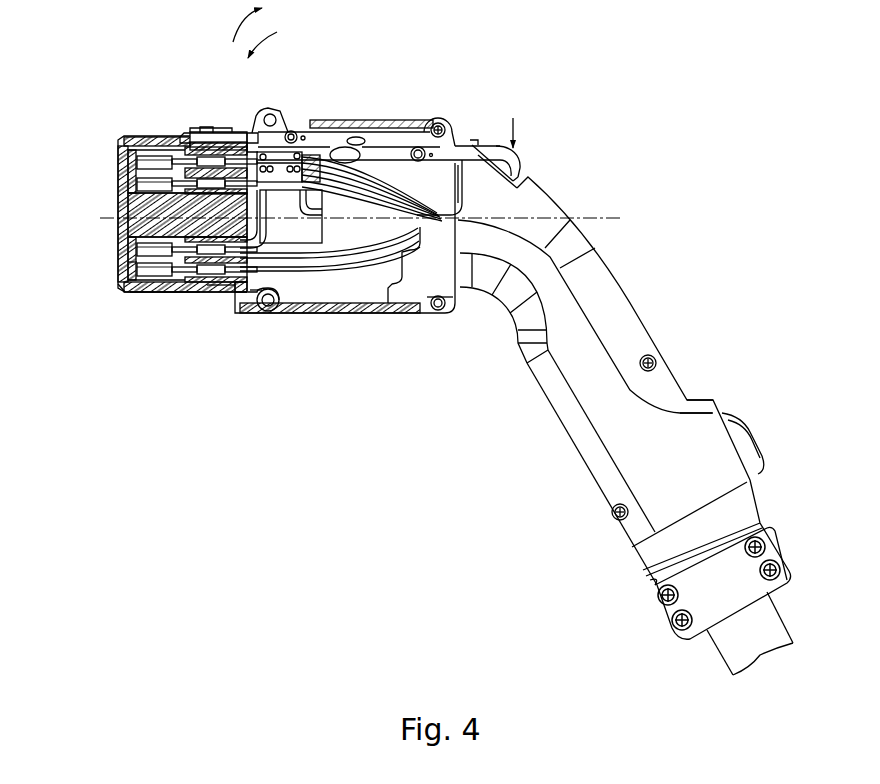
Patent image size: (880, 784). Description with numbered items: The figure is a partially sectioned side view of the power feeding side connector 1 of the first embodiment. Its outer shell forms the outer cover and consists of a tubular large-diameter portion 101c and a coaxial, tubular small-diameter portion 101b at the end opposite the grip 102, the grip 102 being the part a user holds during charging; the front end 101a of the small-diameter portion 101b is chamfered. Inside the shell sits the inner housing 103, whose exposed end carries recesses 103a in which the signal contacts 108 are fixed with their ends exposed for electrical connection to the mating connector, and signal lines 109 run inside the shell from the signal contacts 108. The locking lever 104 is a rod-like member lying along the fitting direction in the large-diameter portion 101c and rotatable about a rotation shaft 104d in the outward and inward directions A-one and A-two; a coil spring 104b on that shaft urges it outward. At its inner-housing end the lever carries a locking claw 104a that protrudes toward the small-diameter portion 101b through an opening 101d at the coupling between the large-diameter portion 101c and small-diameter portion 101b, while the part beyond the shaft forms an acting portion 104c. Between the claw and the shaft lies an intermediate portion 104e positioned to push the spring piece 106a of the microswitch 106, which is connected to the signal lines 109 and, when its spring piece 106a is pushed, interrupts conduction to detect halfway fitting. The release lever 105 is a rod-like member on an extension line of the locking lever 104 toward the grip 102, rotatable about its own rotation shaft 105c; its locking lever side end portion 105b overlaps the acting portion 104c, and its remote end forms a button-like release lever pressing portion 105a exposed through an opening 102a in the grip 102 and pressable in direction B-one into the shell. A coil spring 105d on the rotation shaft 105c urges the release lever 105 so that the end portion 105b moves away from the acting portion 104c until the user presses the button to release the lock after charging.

The power feeding side connector 1 is at (465, 33).
The front end 101a is at (122, 294).
The small-diameter portion 101b is at (150, 297).
The large-diameter portion 101c is at (262, 318).
The opening 101d is at (238, 122).
The grip 102 is at (634, 299).
The opening 102a is at (485, 137).
The inner housing 103 is at (151, 148).
The recesses 103a is at (126, 266).
The locking lever 104 is at (216, 130).
The locking claw 104a is at (198, 128).
The coil spring 104b is at (292, 131).
The acting portion 104c is at (360, 138).
The rotation shaft 104d is at (303, 132).
The intermediate portion 104e is at (257, 127).
The release lever 105 is at (401, 141).
The release lever pressing portion 105a is at (524, 158).
The locking lever side end portion 105b is at (352, 165).
The rotation shaft 105c is at (508, 98).
The coil spring 105d is at (425, 162).
The microswitch 106 is at (303, 195).
The spring piece 106a is at (226, 274).
The signal contacts 108 is at (156, 239).
The signal lines 109 is at (289, 199).